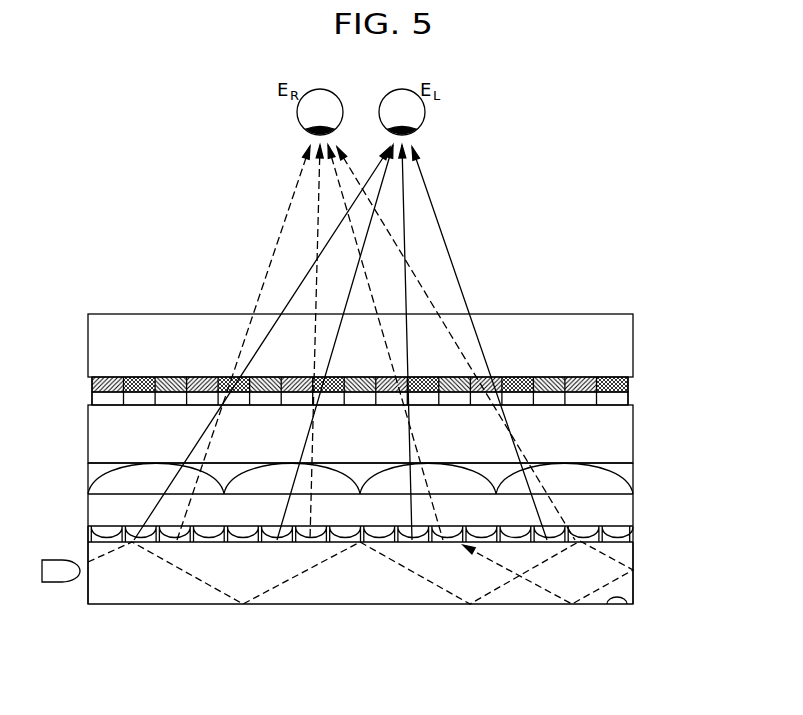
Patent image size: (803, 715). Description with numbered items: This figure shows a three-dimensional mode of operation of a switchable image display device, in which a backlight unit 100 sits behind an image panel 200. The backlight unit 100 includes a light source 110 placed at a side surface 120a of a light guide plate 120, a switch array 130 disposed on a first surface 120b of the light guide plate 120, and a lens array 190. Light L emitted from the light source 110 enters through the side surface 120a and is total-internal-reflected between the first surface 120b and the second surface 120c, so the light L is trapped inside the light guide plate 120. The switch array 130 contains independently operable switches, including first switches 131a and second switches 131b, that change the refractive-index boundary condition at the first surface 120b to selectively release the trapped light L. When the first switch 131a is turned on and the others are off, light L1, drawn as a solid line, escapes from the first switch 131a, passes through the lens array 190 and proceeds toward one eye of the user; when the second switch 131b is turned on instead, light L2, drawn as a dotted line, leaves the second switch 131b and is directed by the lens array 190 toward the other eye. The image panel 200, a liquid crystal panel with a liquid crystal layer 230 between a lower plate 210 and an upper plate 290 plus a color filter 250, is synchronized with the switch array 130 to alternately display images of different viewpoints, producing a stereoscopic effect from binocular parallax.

The backlight unit 100 is at (390, 559).
The light source 110 is at (52, 582).
The light guide plate 120 is at (368, 585).
The side surface 120a is at (88, 550).
The first surface 120b is at (620, 542).
The second surface 120c is at (622, 596).
The switch array 130 is at (634, 531).
The first switch 131a is at (133, 541).
The second switch 131b is at (180, 541).
The lens array 190 is at (620, 485).
The image panel 200 is at (420, 388).
The lower plate 210 is at (394, 434).
The liquid crystal layer 230 is at (628, 399).
The color filter 250 is at (628, 382).
The upper plate 290 is at (633, 348).
The light L is at (495, 590).
The light L1 is at (433, 211).
The light L2 is at (289, 212).